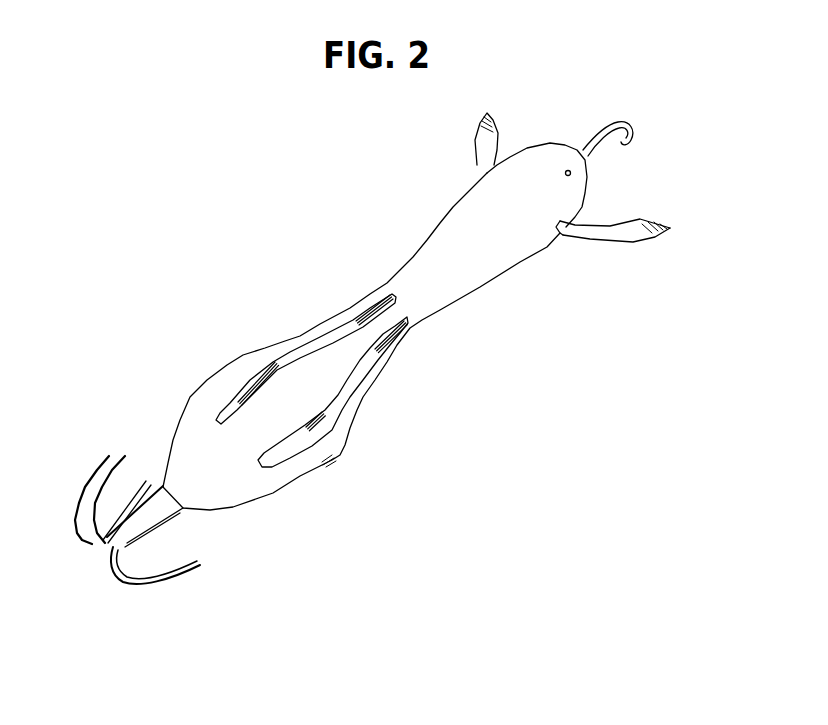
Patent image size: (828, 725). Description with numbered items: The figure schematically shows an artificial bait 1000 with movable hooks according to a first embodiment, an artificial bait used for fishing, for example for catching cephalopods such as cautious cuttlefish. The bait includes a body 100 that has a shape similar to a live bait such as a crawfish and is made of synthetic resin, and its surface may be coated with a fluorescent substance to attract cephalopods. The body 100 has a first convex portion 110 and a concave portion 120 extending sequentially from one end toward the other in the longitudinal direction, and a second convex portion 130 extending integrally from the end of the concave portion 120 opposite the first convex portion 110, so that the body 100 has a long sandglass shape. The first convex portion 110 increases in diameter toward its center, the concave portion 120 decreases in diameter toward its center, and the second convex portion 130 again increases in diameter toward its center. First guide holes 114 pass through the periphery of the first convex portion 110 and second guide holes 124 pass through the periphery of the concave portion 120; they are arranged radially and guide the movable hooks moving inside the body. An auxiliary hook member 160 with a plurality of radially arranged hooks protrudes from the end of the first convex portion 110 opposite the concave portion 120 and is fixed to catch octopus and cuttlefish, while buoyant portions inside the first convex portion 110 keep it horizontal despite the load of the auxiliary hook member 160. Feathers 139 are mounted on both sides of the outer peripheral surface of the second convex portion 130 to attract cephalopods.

The artificial bait 1000 is at (255, 143).
The body 100 is at (285, 279).
The first convex portion 110 is at (291, 468).
The first guide holes 114 is at (237, 393).
The concave portion 120 is at (431, 301).
The second guide holes 124 is at (382, 290).
The second convex portion 130 is at (577, 195).
The feathers 139 is at (633, 242).
The auxiliary hook member 160 is at (93, 457).